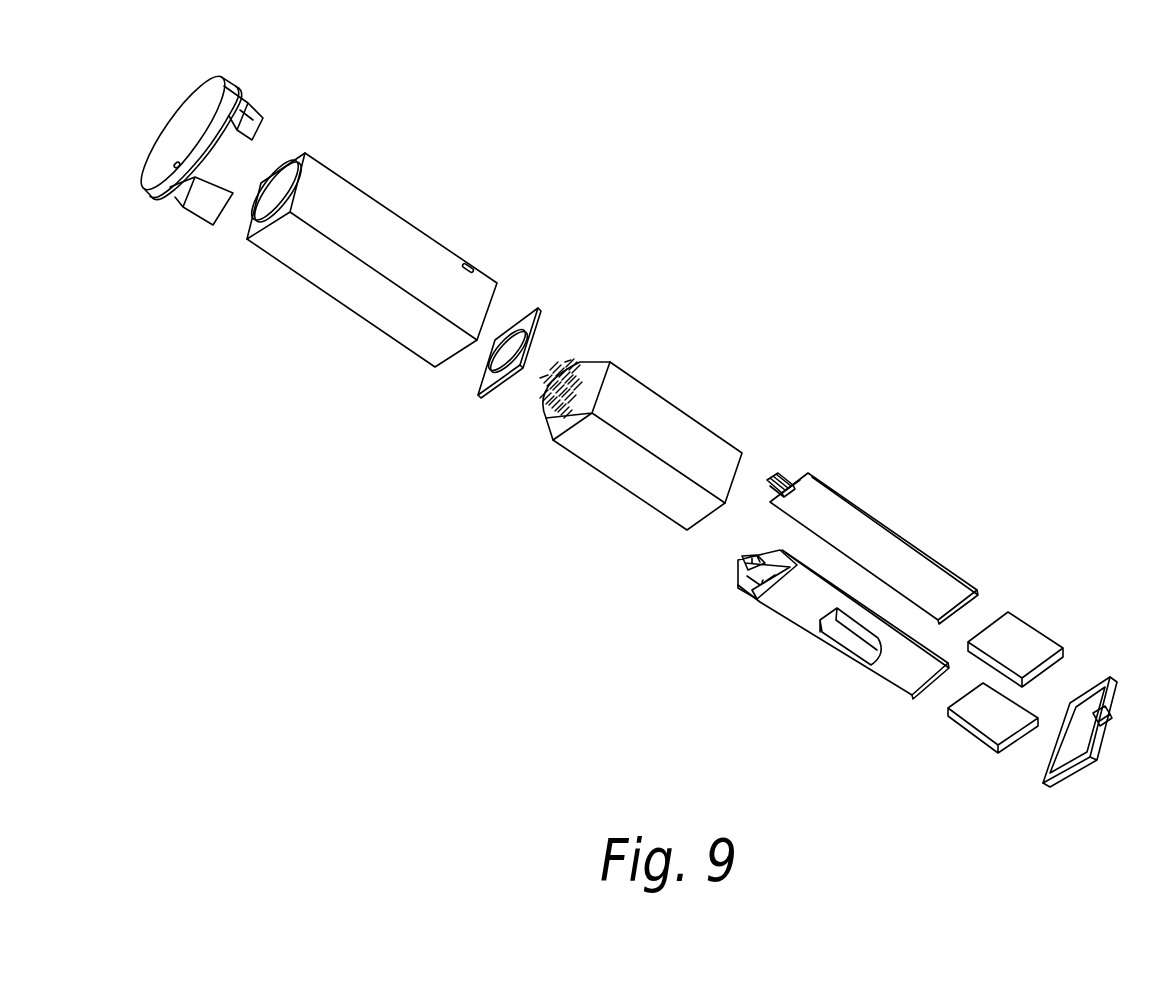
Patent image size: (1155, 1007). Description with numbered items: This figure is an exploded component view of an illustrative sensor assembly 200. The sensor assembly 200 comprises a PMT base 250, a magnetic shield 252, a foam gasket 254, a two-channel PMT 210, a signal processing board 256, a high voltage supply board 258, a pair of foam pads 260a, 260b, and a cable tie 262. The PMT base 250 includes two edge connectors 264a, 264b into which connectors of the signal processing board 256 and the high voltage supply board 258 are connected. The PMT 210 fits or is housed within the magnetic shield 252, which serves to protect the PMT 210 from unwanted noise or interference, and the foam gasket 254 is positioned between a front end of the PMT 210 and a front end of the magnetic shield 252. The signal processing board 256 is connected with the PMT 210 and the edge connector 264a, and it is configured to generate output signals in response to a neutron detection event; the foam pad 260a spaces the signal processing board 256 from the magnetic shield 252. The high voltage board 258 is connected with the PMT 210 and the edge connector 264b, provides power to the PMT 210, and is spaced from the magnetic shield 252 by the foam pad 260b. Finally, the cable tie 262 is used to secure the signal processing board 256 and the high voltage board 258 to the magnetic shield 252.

The sensor assembly 200 is at (790, 217).
The two-channel PMT 210 is at (672, 402).
The PMT base 250 is at (232, 92).
The magnetic shield 252 is at (393, 207).
The foam gasket 254 is at (542, 310).
The signal processing board 256 is at (845, 495).
The high voltage supply board 258 is at (797, 618).
The foam pad 260a is at (1040, 632).
The foam pad 260b is at (972, 737).
The cable tie 262 is at (1043, 783).
The edge connector 264a is at (256, 118).
The edge connector 264b is at (205, 214).